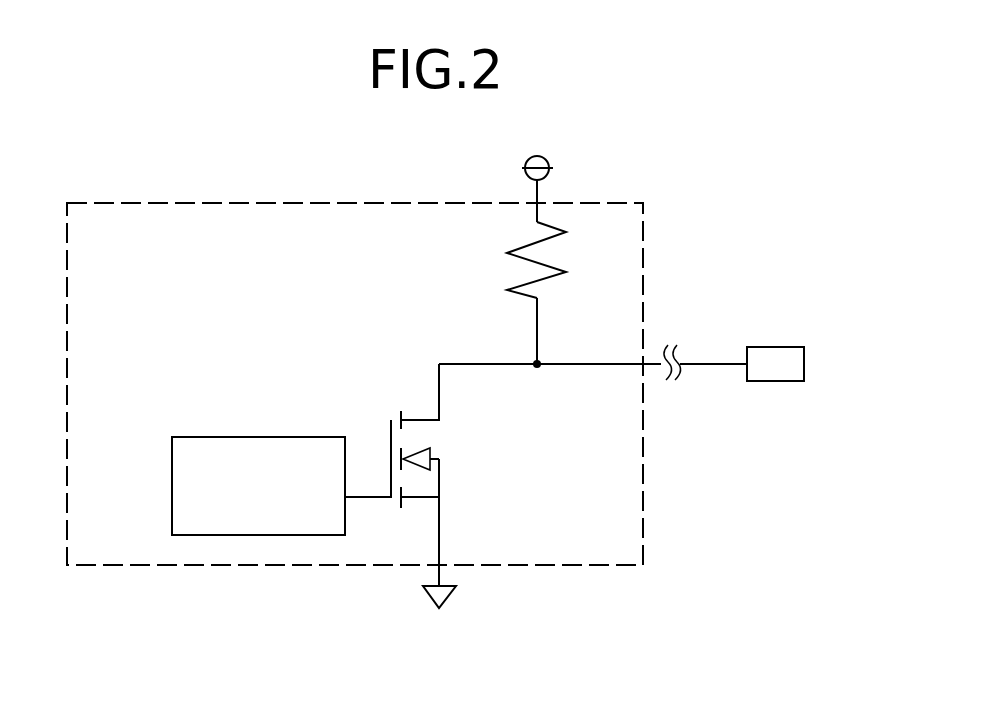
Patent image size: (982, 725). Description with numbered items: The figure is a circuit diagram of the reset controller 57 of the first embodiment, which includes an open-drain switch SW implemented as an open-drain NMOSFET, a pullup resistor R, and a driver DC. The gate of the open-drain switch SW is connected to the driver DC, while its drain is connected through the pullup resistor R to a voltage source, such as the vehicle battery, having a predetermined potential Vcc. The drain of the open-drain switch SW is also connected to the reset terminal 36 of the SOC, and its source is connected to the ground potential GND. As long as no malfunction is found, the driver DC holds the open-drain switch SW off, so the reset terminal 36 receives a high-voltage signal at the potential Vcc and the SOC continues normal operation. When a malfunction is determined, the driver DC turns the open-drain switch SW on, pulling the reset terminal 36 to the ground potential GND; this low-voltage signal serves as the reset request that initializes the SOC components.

The reset terminal 36 is at (777, 381).
The reset controller 57 is at (643, 529).
The pullup resistor R is at (553, 237).
The open-drain switch SW is at (460, 463).
The driver DC is at (250, 537).
The ground potential GND is at (435, 613).
The predetermined potential Vcc is at (533, 173).